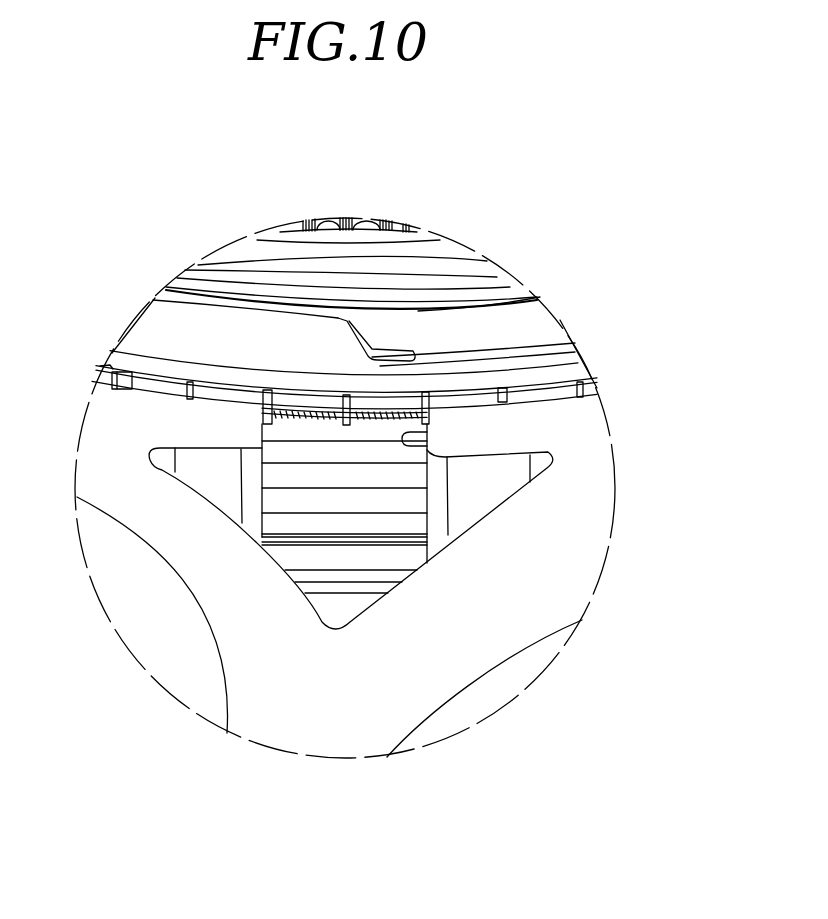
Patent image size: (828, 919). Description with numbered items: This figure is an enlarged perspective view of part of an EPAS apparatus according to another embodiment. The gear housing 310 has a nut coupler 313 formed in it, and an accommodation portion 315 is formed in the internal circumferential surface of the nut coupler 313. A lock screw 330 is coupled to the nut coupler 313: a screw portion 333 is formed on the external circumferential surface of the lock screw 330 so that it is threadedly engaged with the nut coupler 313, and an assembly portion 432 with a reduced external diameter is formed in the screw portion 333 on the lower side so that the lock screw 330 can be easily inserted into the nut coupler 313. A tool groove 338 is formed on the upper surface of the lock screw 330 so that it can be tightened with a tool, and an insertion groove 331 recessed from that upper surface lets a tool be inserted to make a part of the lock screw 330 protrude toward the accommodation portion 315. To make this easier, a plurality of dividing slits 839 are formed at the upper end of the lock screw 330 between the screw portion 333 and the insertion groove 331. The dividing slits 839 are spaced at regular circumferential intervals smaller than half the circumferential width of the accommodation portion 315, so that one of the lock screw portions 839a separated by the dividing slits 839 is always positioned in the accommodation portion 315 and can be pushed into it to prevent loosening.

The gear housing 310 is at (585, 519).
The nut coupler 313 is at (120, 374).
The accommodation portion 315 is at (410, 444).
The lock screw 330 is at (174, 327).
The insertion groove 331 is at (560, 375).
The screw portion 333 is at (275, 458).
The tool groove 338 is at (489, 331).
The assembly portion 432 is at (290, 555).
The dividing slits 839 is at (343, 413).
The lock screw portions 839a is at (390, 410).